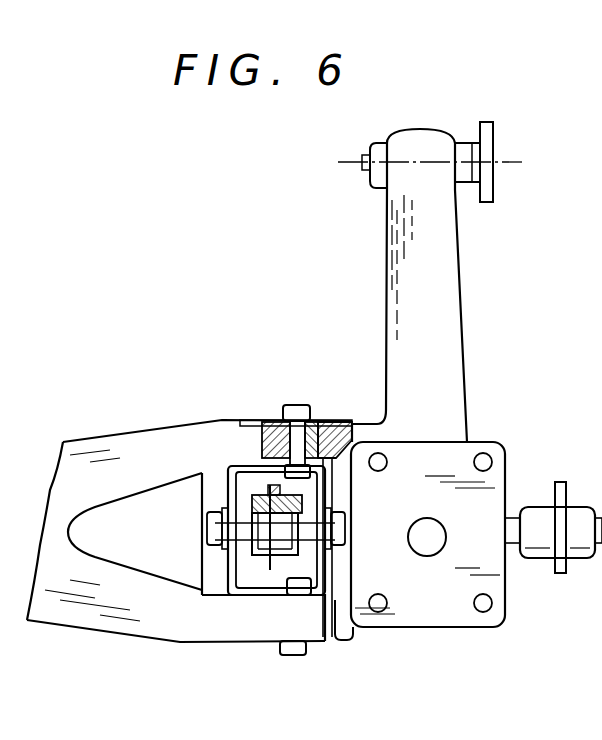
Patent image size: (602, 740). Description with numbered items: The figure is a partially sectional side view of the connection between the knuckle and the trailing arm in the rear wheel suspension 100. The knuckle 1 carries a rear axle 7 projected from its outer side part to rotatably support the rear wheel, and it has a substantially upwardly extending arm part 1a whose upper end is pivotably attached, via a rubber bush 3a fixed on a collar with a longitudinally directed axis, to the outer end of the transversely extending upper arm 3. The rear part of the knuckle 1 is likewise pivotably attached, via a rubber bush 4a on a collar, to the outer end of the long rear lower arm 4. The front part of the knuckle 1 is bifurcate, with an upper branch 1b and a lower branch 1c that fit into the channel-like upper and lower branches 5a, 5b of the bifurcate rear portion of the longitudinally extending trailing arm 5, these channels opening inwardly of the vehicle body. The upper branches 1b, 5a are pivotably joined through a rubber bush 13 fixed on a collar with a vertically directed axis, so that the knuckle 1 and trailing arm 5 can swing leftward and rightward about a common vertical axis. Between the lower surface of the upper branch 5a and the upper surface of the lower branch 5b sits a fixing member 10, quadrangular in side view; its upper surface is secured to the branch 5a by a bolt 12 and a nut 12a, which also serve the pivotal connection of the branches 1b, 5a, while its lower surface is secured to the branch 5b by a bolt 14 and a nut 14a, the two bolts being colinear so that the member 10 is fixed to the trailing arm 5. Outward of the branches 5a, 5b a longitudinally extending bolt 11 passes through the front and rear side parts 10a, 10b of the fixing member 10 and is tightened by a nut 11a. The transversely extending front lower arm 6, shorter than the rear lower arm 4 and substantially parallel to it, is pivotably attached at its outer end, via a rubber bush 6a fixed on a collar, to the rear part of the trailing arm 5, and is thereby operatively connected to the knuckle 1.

The rear wheel suspension 100 is at (320, 250).
The knuckle 1 is at (475, 628).
The arm part 1a is at (447, 289).
The upper branch 1b is at (325, 420).
The lower branch 1c is at (337, 632).
The upper arm 3 is at (497, 128).
The rubber bush 3a is at (462, 142).
The rear lower arm 4 is at (566, 480).
The rubber bush 4a is at (578, 550).
The trailing arm 5 is at (48, 642).
The upper branch 5a is at (222, 420).
The lower branch 5b is at (225, 650).
The front lower arm 6 is at (262, 565).
The rubber bush 6a is at (267, 488).
The rear axle 7 is at (430, 548).
The fixing member 10 is at (202, 475).
The front side part 10a is at (215, 548).
The rear side part 10b is at (330, 565).
The bolt 11 is at (345, 530).
The nut 11a is at (207, 522).
The bolt 12 is at (297, 403).
The nut 12a is at (330, 480).
The rubber bush 13 is at (275, 422).
The bolt 14 is at (295, 658).
The nut 14a is at (298, 590).